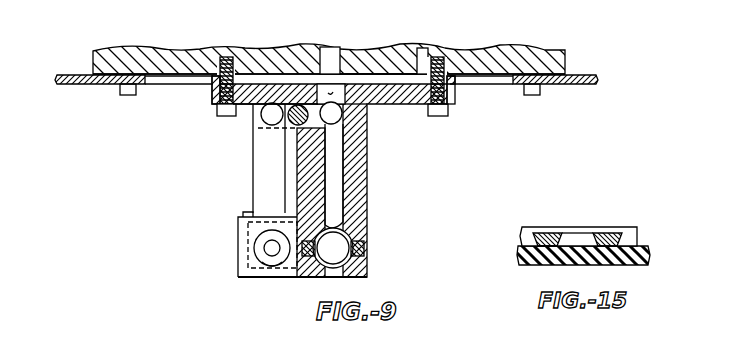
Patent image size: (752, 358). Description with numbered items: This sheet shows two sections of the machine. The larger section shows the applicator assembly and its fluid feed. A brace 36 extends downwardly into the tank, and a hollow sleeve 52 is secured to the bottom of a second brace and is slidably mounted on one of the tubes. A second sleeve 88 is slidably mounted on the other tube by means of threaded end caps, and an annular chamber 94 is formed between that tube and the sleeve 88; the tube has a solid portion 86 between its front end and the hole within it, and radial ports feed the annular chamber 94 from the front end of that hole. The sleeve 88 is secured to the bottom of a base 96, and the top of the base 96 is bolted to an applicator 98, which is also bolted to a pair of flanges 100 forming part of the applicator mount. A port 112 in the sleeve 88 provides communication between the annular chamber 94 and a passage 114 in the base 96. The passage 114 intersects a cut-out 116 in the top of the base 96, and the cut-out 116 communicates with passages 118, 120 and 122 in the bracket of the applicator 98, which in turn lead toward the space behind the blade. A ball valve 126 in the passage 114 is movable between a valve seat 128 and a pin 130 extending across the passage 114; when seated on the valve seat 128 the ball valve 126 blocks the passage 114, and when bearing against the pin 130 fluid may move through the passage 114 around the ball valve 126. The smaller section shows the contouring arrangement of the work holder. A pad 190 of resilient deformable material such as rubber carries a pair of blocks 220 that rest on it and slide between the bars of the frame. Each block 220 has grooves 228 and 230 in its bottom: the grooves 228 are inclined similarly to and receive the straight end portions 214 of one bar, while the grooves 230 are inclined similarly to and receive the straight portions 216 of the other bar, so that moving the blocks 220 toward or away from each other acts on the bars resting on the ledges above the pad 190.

In FIG. 9, the brace 36 is at (262, 173).
In FIG. 9, the hollow sleeve 52 is at (268, 277).
In FIG. 9, the solid portion 86 is at (364, 267).
In FIG. 9, the sleeve 88 is at (362, 238).
In FIG. 9, the annular chamber 94 is at (332, 277).
In FIG. 9, the base 96 is at (362, 173).
In FIG. 9, the applicator 98 is at (503, 53).
In FIG. 9, the flanges 100 is at (67, 86).
In FIG. 9, the port 112 is at (367, 223).
In FIG. 9, the passage 114 is at (334, 152).
In FIG. 9, the cut-out 116 is at (380, 78).
In FIG. 9, the passage 118 is at (243, 56).
In FIG. 9, the passage 120 is at (332, 56).
In FIG. 9, the passage 122 is at (421, 56).
In FIG. 9, the ball valve 126 is at (360, 124).
In FIG. 9, the valve seat 128 is at (297, 146).
In FIG. 9, the pin 130 is at (330, 93).
In FIG. 15, the pad 190 is at (612, 260).
In FIG. 15, the straight end portions 214 is at (637, 231).
In FIG. 15, the straight portions 216 is at (550, 233).
In FIG. 15, the blocks 220 is at (580, 238).
In FIG. 15, the grooves 228 is at (610, 233).
In FIG. 15, the grooves 230 is at (555, 233).